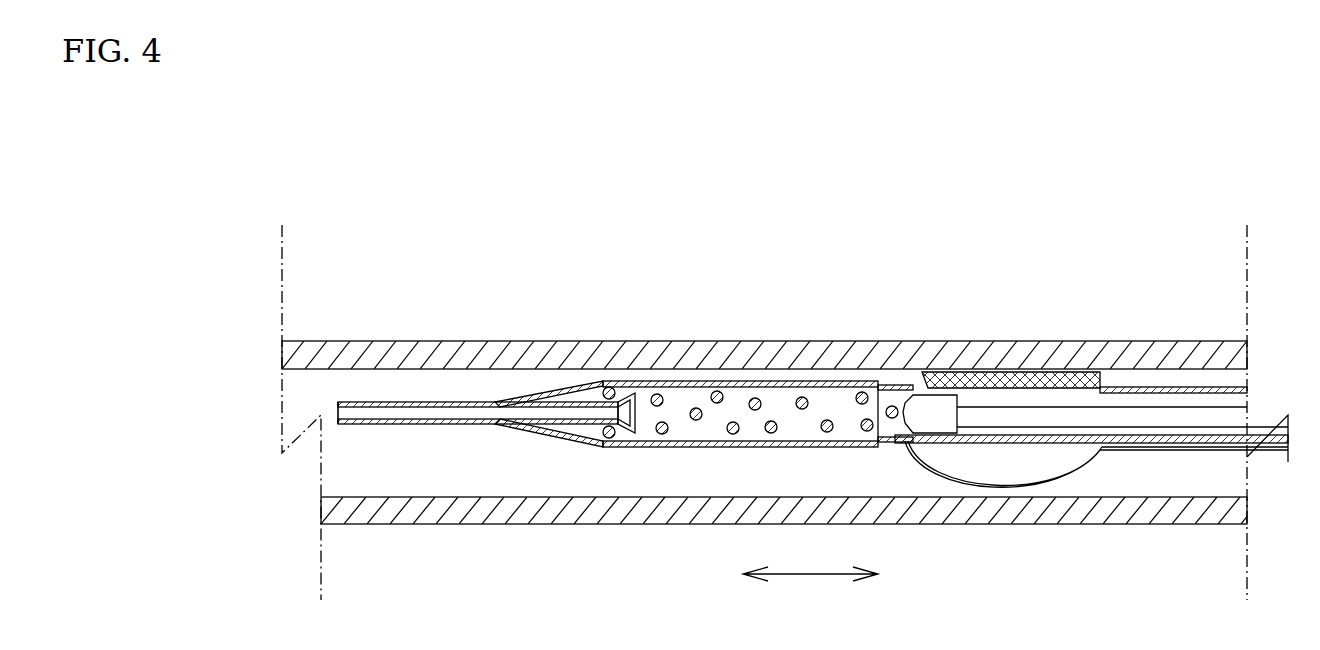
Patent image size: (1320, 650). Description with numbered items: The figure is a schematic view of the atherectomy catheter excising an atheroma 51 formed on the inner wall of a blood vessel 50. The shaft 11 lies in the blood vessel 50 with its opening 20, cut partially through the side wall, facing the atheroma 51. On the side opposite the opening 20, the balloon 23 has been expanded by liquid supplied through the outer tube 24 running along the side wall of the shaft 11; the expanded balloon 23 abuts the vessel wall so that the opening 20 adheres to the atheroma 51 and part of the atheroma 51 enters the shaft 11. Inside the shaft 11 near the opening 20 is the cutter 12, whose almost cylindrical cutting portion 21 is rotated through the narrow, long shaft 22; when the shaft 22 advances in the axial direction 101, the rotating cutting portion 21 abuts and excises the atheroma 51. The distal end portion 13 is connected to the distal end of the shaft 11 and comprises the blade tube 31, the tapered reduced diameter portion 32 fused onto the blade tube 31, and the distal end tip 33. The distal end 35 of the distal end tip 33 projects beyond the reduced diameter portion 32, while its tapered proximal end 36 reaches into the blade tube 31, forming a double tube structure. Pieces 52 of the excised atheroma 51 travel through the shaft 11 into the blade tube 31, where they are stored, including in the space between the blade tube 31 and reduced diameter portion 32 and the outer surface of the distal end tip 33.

The shaft 11 is at (1212, 387).
The cutter 12 is at (1180, 402).
The distal end portion 13 is at (615, 470).
The opening 20 is at (915, 388).
The cutting portion 21 is at (1078, 407).
The shaft 22 is at (1168, 427).
The balloon 23 is at (968, 497).
The outer tube 24 is at (1272, 455).
The blade tube 31 is at (820, 381).
The reduced diameter portion 32 is at (555, 392).
The distal end tip 33 is at (418, 402).
The distal end 35 is at (338, 412).
The proximal end 36 is at (635, 413).
The blood vessel 50 is at (666, 525).
The atheroma 51 is at (1040, 390).
The pieces 52 is at (773, 421).
The axial direction 101 is at (811, 576).